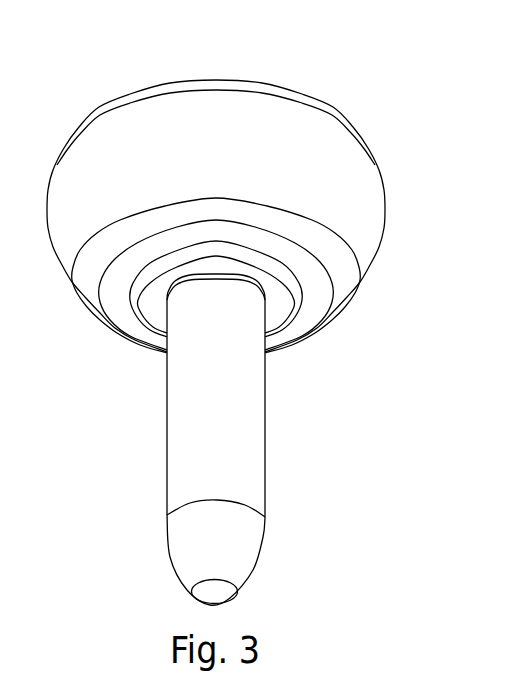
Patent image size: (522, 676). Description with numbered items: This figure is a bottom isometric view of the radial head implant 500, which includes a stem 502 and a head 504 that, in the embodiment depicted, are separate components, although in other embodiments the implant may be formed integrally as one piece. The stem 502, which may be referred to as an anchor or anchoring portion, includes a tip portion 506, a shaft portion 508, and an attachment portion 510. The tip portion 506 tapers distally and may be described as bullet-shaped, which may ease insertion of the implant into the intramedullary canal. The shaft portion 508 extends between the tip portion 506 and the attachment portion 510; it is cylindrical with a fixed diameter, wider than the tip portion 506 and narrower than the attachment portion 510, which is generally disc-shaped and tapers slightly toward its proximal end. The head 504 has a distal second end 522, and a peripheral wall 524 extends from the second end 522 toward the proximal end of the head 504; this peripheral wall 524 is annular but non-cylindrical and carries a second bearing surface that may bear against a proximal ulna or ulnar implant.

The radial head implant 500 is at (388, 88).
The stem 502 is at (296, 458).
The head 504 is at (420, 170).
The tip portion 506 is at (168, 558).
The shaft portion 508 is at (165, 415).
The attachment portion 510 is at (148, 297).
The second end 522 is at (310, 307).
The peripheral wall 524 is at (367, 200).